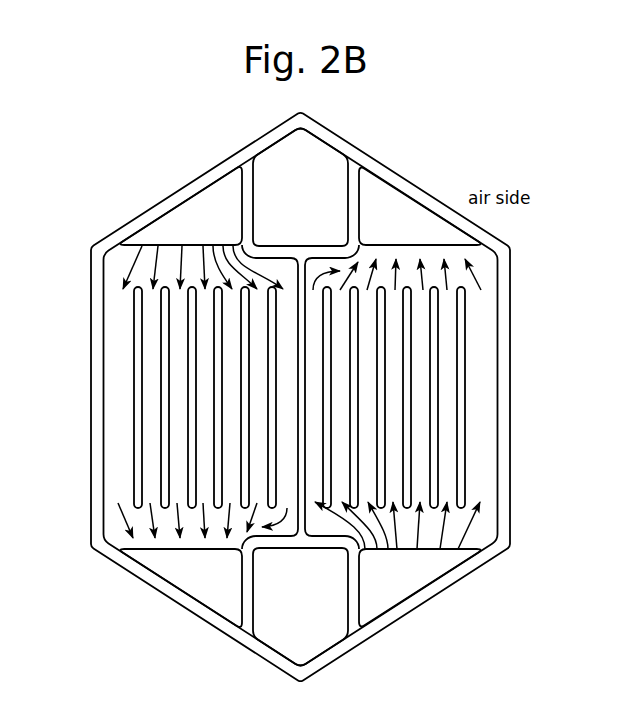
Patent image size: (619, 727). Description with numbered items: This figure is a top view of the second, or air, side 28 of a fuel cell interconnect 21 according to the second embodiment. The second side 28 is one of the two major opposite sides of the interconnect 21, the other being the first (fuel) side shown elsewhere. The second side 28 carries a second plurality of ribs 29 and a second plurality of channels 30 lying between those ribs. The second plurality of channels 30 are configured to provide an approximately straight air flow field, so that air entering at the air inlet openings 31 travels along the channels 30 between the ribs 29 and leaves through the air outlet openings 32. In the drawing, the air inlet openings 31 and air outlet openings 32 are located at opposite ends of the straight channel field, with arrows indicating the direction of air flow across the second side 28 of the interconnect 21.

The interconnect 21 is at (534, 319).
The second side 28 is at (511, 465).
The second plurality of ribs 29 is at (466, 388).
The second plurality of channels 30 is at (126, 389).
The air inlet openings 31 is at (189, 214).
The air outlet openings 32 is at (414, 209).